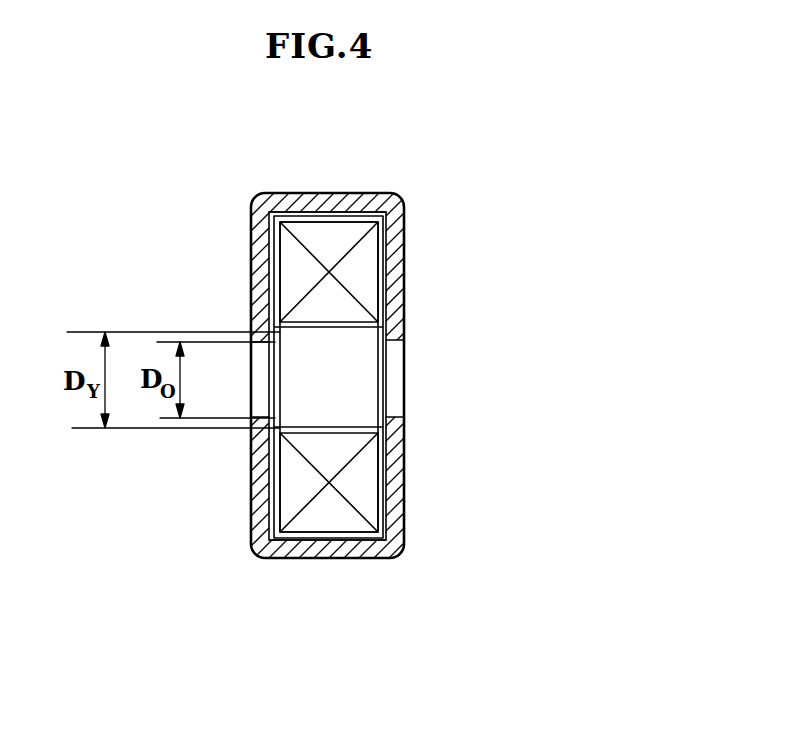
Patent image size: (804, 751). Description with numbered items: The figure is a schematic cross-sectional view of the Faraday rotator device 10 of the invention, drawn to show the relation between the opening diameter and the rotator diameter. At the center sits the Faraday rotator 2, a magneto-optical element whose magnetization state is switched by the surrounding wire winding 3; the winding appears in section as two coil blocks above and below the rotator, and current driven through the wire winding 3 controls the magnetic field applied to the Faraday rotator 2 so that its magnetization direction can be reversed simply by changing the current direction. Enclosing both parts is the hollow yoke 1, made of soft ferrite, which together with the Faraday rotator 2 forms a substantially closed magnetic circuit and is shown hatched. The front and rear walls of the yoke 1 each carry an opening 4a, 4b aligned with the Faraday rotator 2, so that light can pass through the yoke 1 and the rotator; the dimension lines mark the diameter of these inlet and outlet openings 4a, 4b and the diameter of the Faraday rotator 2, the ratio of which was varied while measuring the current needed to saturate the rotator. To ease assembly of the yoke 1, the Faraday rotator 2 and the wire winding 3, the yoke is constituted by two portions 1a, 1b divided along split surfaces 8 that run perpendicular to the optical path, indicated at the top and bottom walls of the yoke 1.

The hollow yoke 1 is at (283, 175).
The Faraday rotator device 10 is at (384, 368).
The split surfaces 8 is at (328, 200).
The Faraday rotator 2 is at (365, 340).
The wire winding 3 is at (372, 503).
The opening 4a is at (263, 404).
The opening 4b is at (394, 392).
The portion of yoke 1a is at (288, 560).
The portion of yoke 1b is at (403, 557).